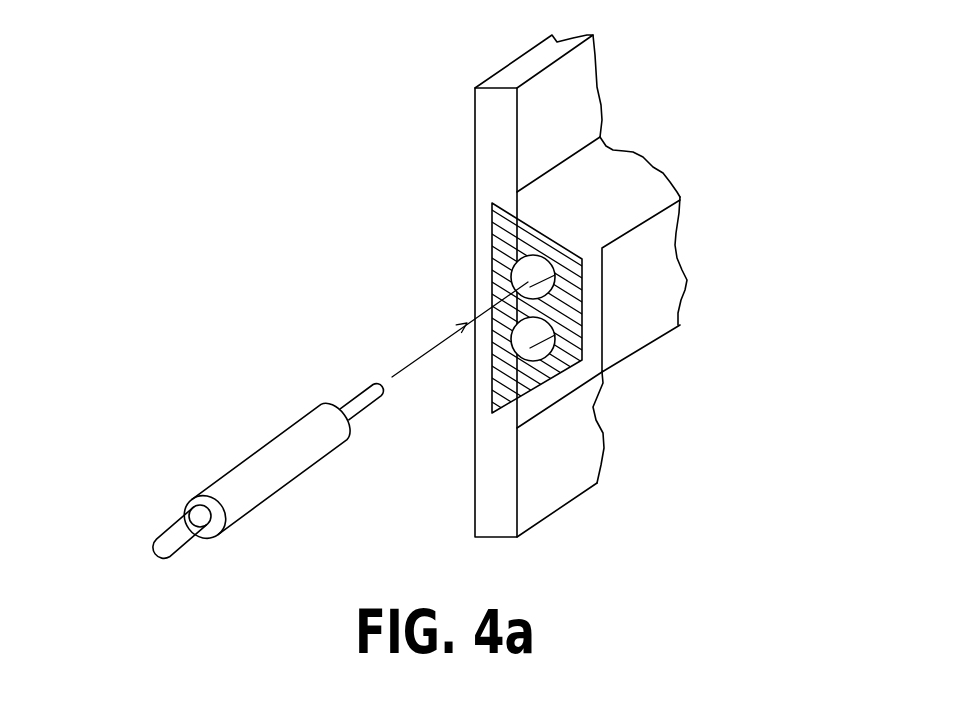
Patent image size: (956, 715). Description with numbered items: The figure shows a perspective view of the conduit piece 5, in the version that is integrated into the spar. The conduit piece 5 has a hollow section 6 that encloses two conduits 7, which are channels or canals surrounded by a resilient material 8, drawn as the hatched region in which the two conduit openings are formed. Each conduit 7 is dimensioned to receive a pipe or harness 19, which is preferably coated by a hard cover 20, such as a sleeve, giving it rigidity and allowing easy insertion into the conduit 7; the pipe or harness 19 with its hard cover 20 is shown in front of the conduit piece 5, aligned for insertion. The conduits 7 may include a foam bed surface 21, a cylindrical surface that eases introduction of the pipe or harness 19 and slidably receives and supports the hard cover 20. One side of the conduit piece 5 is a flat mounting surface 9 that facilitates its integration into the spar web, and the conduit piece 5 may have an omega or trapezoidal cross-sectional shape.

The conduit piece 5 is at (655, 108).
The hollow section 6 is at (645, 267).
The conduit 7 is at (525, 268).
The resilient material 8 is at (497, 390).
The flat mounting surface 9 is at (473, 273).
The pipe or harness 19 is at (175, 533).
The hard cover 20 is at (255, 462).
The foam bed surface 21 is at (545, 352).